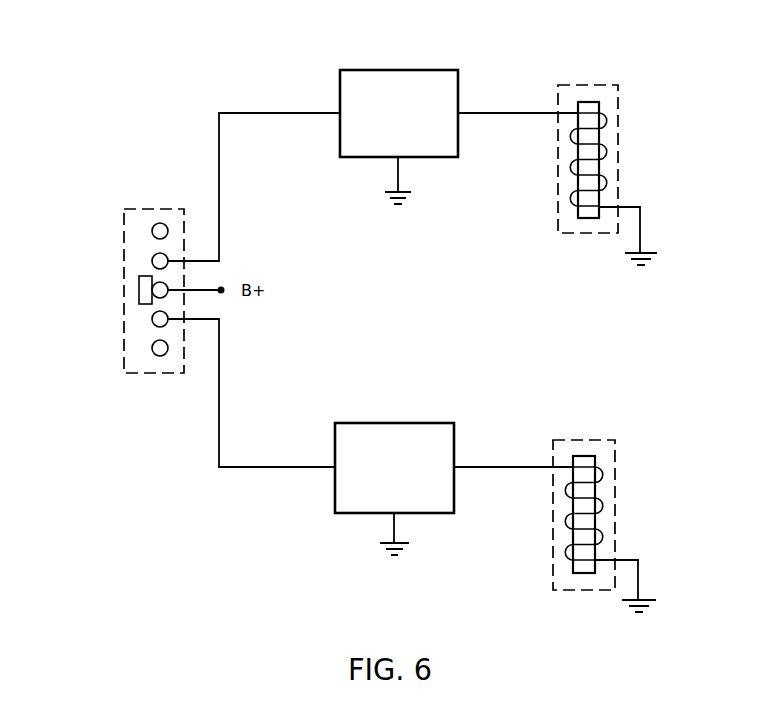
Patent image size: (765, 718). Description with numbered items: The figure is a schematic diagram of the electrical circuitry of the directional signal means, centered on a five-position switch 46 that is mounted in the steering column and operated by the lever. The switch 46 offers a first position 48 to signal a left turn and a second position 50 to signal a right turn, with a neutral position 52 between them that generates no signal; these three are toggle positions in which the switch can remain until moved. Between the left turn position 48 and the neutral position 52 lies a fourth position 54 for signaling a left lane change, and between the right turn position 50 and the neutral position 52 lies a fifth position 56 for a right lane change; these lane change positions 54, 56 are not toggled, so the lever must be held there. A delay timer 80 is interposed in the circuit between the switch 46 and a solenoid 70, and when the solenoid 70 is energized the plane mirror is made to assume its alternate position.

The five-position switch 46 is at (147, 197).
The second position 50 is at (152, 228).
The fifth position 56 is at (152, 259).
The neutral position 52 is at (139, 288).
The fourth position 54 is at (152, 317).
The first position 48 is at (152, 346).
The delay timer 80 is at (367, 82).
The solenoid 70 is at (602, 248).